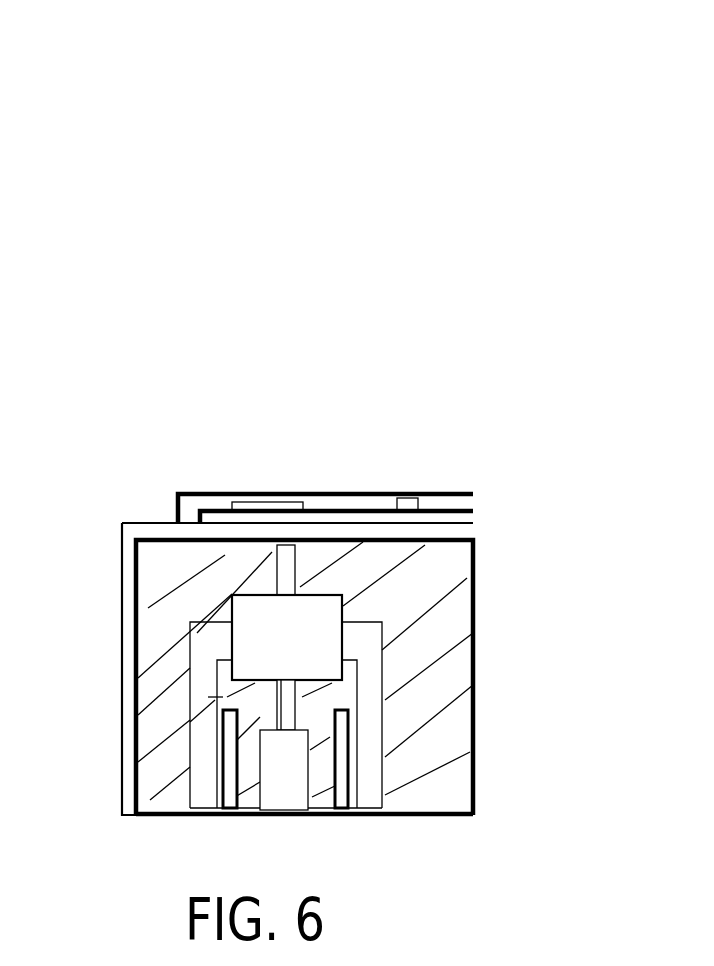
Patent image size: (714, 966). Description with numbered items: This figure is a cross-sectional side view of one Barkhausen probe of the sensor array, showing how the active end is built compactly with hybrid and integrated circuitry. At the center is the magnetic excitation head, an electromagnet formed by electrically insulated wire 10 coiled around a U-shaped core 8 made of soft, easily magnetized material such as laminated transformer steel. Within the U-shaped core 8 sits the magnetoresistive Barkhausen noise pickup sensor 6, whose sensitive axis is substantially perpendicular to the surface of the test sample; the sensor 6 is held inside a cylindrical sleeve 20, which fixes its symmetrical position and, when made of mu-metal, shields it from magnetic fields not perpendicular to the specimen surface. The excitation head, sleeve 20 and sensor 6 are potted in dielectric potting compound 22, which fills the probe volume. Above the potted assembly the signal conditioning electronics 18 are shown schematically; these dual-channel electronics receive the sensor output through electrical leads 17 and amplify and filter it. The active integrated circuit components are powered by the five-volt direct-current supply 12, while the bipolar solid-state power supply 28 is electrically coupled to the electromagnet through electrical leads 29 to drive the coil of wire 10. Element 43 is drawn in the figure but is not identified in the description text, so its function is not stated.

The Barkhausen noise pickup sensor 6 is at (285, 768).
The U-shaped core 8 is at (541, 323).
The electrically insulated wire 10 is at (312, 632).
The 5 Vdc supply 12 is at (238, 597).
The electrical leads 17 is at (300, 715).
The signal conditioning electronics 18 is at (410, 500).
The cylindrical sleeve 20 is at (352, 745).
The potting compound 22 is at (183, 602).
The bipolar solid-state power supply 28 is at (222, 505).
The electrical leads 29 is at (292, 560).
The cover plate 43 is at (178, 515).